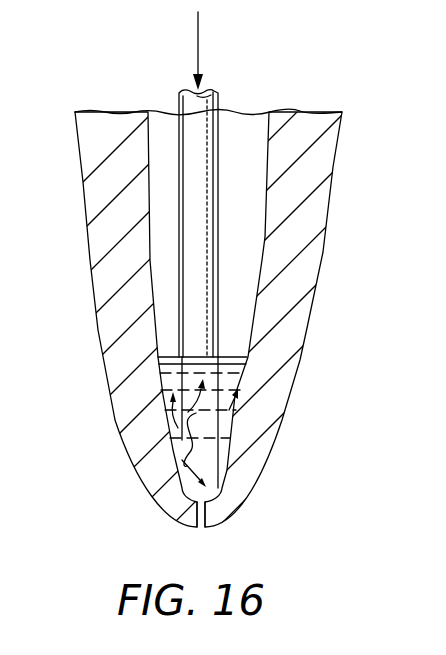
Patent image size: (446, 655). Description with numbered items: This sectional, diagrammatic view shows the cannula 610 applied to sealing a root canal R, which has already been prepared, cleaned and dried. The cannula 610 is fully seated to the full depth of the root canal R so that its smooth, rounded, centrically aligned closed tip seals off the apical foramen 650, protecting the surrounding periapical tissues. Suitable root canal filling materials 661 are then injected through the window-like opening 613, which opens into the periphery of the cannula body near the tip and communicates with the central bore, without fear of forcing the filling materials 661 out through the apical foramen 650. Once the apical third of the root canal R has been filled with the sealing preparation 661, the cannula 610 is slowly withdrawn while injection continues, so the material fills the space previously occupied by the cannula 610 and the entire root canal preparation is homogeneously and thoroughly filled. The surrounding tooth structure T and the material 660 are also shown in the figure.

The cannula 610 is at (222, 197).
The window-like opening 613 is at (177, 449).
The apical foramen 650 is at (197, 517).
The sealing filling material 660 is at (235, 382).
The root canal filling materials 661 is at (198, 46).
The root canal R is at (262, 250).
The tooth T is at (307, 328).